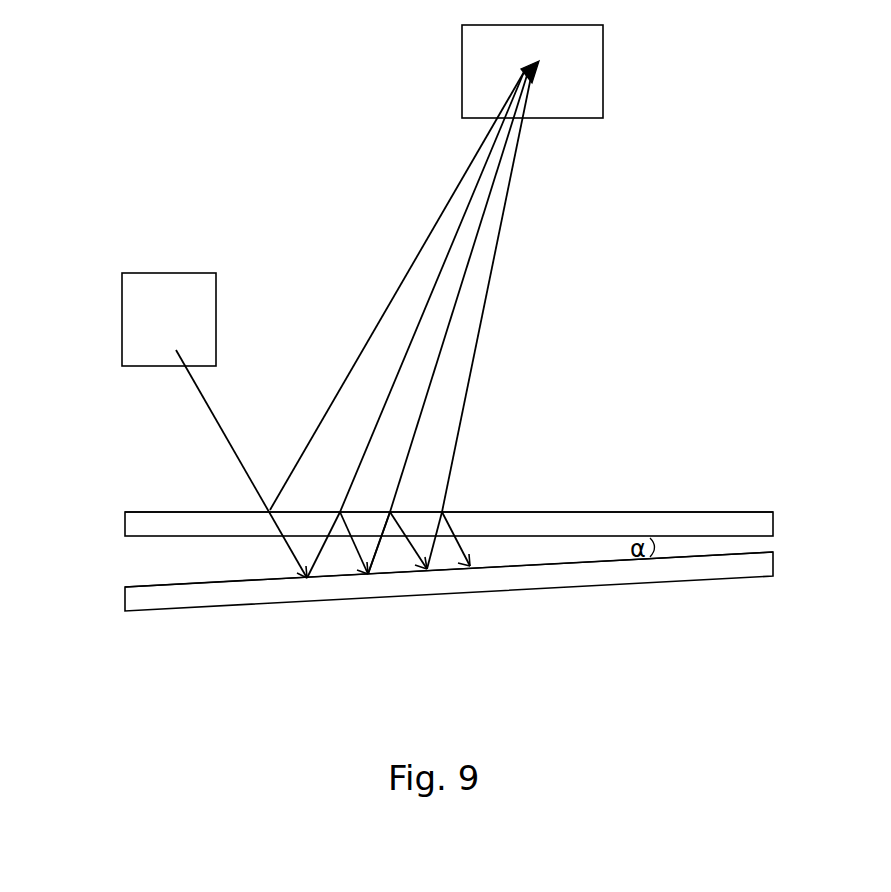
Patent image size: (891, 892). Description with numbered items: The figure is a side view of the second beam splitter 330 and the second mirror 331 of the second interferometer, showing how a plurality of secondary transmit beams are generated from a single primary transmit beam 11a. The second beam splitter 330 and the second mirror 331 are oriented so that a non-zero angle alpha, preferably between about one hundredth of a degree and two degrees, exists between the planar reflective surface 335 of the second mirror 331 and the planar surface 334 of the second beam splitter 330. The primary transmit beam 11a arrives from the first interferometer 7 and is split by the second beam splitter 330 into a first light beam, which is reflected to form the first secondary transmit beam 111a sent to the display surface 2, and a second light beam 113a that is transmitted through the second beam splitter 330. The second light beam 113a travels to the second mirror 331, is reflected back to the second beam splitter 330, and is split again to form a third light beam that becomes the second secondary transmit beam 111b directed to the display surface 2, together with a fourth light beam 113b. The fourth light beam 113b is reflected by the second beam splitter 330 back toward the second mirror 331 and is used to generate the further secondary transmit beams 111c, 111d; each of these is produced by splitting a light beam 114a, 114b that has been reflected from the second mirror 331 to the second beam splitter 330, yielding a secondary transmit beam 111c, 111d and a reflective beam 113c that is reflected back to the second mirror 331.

The display surface 2 is at (603, 40).
The first interferometer 7 is at (122, 297).
The primary transmit beam 11a is at (197, 388).
The first secondary transmit beam 111a is at (405, 280).
The second secondary transmit beam 111b is at (447, 263).
The secondary transmit beam 111c is at (468, 280).
The secondary transmit beam 111d is at (485, 308).
The second light beam 113a is at (287, 549).
The fourth light beam 113b is at (352, 547).
The reflective beam 113c is at (403, 555).
The light beam 114a is at (383, 552).
The light beam 114b is at (433, 553).
The second beam splitter 330 is at (775, 523).
The second mirror 331 is at (690, 568).
The planar surface of the second beam splitter 334 is at (148, 512).
The planar reflective surface of the second mirror 335 is at (160, 587).